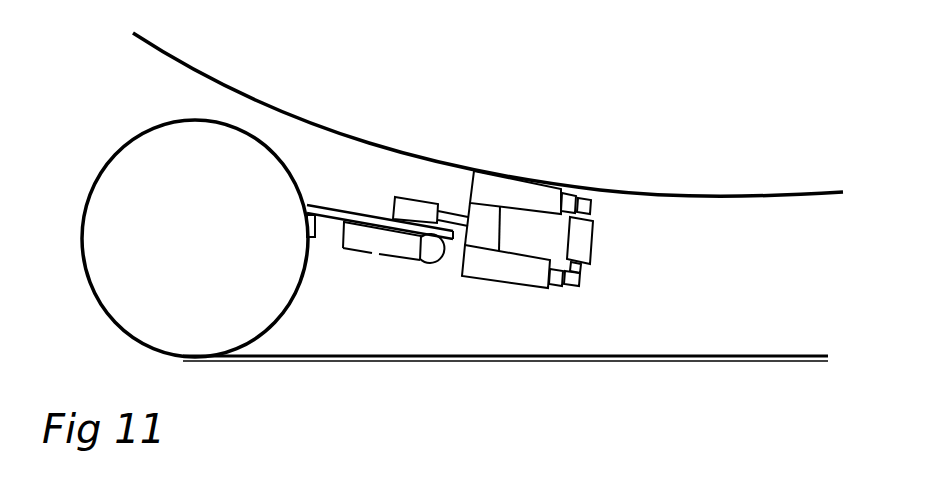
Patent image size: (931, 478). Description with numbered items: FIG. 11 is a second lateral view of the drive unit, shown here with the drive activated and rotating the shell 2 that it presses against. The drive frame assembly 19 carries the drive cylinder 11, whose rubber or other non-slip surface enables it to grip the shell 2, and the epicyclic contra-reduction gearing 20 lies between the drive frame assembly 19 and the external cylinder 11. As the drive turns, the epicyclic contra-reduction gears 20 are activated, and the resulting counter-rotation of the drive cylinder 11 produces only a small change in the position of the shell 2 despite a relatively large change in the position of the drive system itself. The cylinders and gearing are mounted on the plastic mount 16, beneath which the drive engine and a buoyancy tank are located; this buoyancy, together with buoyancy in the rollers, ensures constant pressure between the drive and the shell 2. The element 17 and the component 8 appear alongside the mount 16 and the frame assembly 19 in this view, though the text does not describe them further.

The conveyor belt 2 is at (758, 200).
The guide element 8 is at (598, 222).
The drive cylinder 11 is at (528, 192).
The plastic mount 16 is at (436, 252).
The sensor 17 is at (407, 200).
The drive frame assembly 19 is at (595, 208).
The epicyclic contra-reduction gearing 20 is at (556, 288).